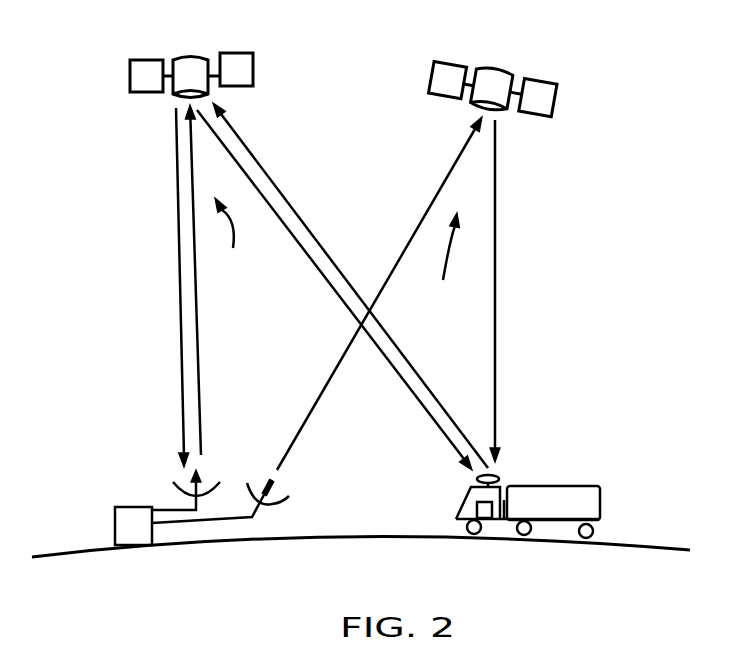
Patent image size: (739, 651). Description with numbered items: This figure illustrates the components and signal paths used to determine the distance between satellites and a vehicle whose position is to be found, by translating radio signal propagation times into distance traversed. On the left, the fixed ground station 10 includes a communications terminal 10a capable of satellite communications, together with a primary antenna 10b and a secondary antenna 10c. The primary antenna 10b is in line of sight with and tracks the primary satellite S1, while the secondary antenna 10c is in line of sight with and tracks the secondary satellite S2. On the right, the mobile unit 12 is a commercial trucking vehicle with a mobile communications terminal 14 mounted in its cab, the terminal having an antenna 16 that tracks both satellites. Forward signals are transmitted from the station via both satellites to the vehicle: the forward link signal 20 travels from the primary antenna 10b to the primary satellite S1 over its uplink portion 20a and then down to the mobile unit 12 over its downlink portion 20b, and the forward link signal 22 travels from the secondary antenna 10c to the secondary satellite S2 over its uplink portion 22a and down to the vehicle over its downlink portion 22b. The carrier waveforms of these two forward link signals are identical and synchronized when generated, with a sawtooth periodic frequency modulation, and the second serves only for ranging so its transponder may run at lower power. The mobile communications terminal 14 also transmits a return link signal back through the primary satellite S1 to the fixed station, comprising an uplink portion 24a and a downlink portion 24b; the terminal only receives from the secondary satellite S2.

The primary satellite S1 is at (187, 62).
The secondary satellite S2 is at (500, 78).
The fixed ground station 10 is at (203, 488).
The communications terminal 10a is at (115, 528).
The primary antenna 10b is at (173, 487).
The secondary antenna 10c is at (283, 500).
The mobile unit 12 is at (532, 487).
The mobile communications terminal 14 is at (478, 507).
The antenna 16 is at (500, 478).
The forward link signal 20 is at (236, 239).
The uplink portion of forward link signal 20a is at (200, 300).
The downlink portion of forward link signal 20b is at (297, 243).
The forward link signal 22 is at (442, 264).
The uplink portion of forward link signal 22a is at (443, 182).
The downlink portion of forward link signal 22b is at (497, 192).
The uplink portion of return link signal 24a is at (268, 176).
The downlink portion of return link signal 24b is at (177, 212).